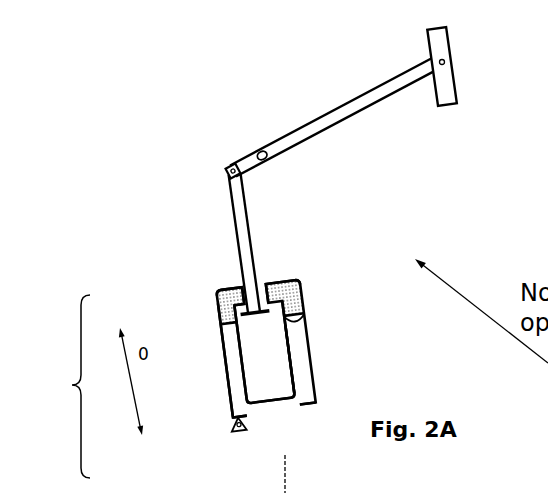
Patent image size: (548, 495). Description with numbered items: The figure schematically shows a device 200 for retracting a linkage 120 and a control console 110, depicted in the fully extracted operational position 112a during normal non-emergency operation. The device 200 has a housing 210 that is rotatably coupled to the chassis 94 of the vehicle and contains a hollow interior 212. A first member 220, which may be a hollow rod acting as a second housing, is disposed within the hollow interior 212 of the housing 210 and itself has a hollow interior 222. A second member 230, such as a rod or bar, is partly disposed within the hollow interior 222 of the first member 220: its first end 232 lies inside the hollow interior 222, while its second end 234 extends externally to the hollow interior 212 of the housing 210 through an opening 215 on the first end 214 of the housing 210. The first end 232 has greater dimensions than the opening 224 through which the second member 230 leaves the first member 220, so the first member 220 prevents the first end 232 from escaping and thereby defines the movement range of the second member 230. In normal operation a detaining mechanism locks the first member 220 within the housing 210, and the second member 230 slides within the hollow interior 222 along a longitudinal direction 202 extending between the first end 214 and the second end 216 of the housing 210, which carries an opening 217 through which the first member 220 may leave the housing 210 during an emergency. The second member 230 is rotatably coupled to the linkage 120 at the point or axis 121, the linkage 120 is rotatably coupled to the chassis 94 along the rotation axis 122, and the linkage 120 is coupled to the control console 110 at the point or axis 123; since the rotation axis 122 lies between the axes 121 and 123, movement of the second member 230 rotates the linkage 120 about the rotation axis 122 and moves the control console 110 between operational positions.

The chassis 94 is at (230, 427).
The control console 110 is at (455, 78).
The fully extracted operational position 112a is at (492, 46).
The linkage 120 is at (358, 100).
The point or axis 121 is at (226, 166).
The rotation axis 122 is at (257, 151).
The point or axis 123 is at (441, 60).
The device 200 is at (60, 386).
The longitudinal direction 202 is at (128, 372).
The housing 210 is at (223, 363).
The hollow interior 212 is at (230, 338).
The first end 214 is at (213, 292).
The opening 215 is at (238, 280).
The second end 216 is at (337, 400).
The opening 217 is at (280, 415).
The first member 220 is at (288, 338).
The hollow interior 222 is at (283, 372).
The opening 224 is at (266, 280).
The second member 230 is at (242, 223).
The first end 232 is at (300, 318).
The second end 234 is at (226, 177).